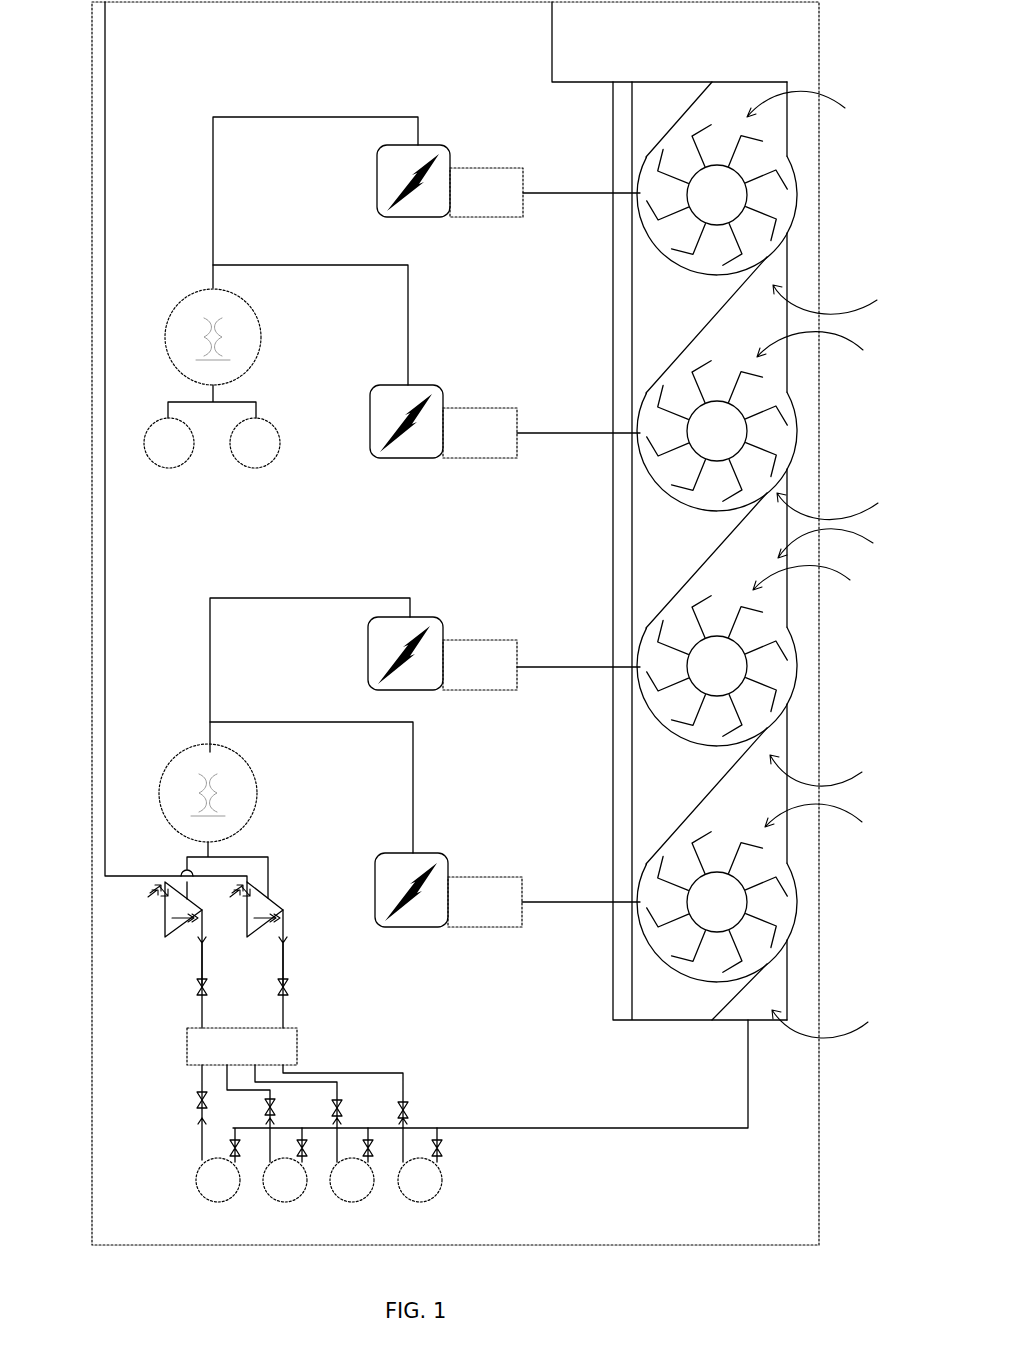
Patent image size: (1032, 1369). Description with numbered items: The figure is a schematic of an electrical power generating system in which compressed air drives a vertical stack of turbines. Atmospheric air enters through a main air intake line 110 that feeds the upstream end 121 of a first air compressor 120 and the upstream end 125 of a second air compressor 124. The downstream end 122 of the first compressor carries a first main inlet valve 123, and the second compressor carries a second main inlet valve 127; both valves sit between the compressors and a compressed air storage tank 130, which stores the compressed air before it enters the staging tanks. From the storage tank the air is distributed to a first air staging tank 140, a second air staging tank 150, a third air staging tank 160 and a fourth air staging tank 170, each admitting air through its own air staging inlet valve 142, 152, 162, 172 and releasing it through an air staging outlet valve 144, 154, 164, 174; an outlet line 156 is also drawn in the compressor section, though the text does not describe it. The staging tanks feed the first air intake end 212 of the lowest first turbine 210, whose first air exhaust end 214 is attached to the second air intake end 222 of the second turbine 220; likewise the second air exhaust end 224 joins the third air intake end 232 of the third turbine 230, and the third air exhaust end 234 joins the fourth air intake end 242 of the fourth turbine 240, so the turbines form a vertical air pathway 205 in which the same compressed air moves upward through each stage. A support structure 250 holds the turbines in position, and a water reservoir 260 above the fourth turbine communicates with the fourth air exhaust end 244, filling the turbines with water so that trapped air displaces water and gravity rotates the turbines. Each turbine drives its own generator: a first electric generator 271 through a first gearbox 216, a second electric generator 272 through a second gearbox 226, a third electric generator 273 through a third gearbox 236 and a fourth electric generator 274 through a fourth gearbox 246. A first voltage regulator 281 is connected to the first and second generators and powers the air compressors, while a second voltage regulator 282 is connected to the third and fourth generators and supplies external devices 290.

The main air intake line 110 is at (107, 512).
The first air compressor 120 is at (192, 918).
The upstream end 121 is at (157, 892).
The downstream end 122 is at (198, 959).
The first main inlet valve 123 is at (198, 987).
The second air compressor 124 is at (279, 897).
The upstream end 125 is at (237, 887).
The second main inlet valve 127 is at (288, 987).
The compressed air storage tank 130 is at (260, 1063).
The first air staging tank 140 is at (220, 1200).
The first air staging inlet valve 142 is at (197, 1100).
The first air staging outlet valve 144 is at (240, 1150).
The second air staging tank 150 is at (290, 1200).
The second air staging inlet valve 152 is at (275, 1106).
The second air staging outlet valve 154 is at (307, 1150).
The outlet line 156 is at (293, 964).
The third air staging tank 160 is at (357, 1200).
The third air staging inlet valve 162 is at (342, 1108).
The third air staging outlet valve 164 is at (374, 1150).
The fourth air staging tank 170 is at (420, 1200).
The fourth air staging inlet valve 172 is at (410, 1110).
The fourth air staging outlet valve 174 is at (444, 1150).
The vertical air pathway 205 is at (846, 545).
The first turbine 210 is at (798, 893).
The first air intake end 212 is at (841, 1024).
The first air exhaust end 214 is at (835, 820).
The first gearbox 216 is at (494, 877).
The second turbine 220 is at (798, 653).
The second air intake end 222 is at (837, 770).
The second air exhaust end 224 is at (823, 581).
The second gearbox 226 is at (498, 640).
The third turbine 230 is at (798, 424).
The third air intake end 232 is at (848, 506).
The third air exhaust end 234 is at (831, 348).
The third gearbox 236 is at (492, 408).
The fourth turbine 240 is at (798, 190).
The fourth air intake end 242 is at (845, 299).
The fourth air exhaust end 244 is at (817, 108).
The fourth gearbox 246 is at (496, 168).
The support structure 250 is at (807, 723).
The water reservoir 260 is at (795, 44).
The first electric generator 271 is at (384, 853).
The second electric generator 272 is at (368, 660).
The third electric generator 273 is at (371, 385).
The fourth electric generator 274 is at (377, 185).
The first voltage regulator 281 is at (188, 752).
The second voltage regulator 282 is at (190, 292).
The external devices 290 is at (188, 466).